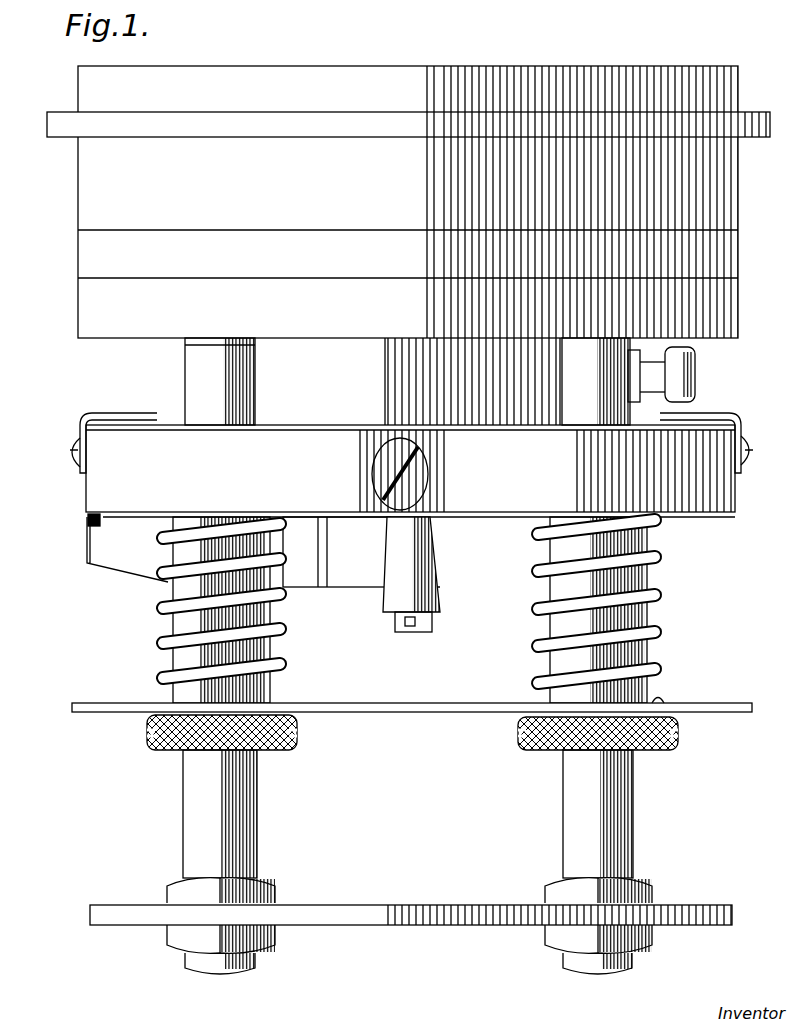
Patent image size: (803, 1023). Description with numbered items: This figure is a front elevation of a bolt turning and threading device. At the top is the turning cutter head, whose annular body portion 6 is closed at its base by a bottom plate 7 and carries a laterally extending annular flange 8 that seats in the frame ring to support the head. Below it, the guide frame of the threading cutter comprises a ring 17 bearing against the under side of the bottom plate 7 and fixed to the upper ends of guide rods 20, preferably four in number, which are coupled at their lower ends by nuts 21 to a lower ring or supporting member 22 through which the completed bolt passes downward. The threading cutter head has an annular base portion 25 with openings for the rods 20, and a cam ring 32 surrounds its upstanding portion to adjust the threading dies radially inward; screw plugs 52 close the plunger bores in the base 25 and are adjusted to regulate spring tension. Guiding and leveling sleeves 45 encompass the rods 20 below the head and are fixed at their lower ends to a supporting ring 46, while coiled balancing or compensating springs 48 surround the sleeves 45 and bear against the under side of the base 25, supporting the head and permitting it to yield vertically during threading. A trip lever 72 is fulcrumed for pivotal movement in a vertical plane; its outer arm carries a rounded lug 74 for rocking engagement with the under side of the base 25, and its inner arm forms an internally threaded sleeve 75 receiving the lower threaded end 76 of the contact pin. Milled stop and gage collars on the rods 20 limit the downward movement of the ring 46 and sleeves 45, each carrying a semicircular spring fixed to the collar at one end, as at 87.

The annular body portion 6 is at (383, 215).
The bottom plate 7 is at (383, 272).
The laterally extending annular flange 8 is at (57, 135).
The ring 17 is at (14, 339).
The guide rods 20 is at (205, 393).
The nuts 21 is at (250, 893).
The lower ring or supporting member 22 is at (430, 912).
The annular base portion 25 is at (107, 483).
The cam ring 32 is at (263, 361).
The guiding and leveling sleeves 45 is at (187, 620).
The supporting ring 46 is at (458, 712).
The coiled balancing or compensating springs 48 is at (147, 577).
The screw plugs 52 is at (418, 488).
The trip lever 72 is at (352, 577).
The rounded lug 74 is at (88, 522).
The internally threaded sleeve 75 is at (440, 568).
The lower threaded end 76 is at (433, 620).
The fixing point of the spring to the collar 87 is at (520, 733).